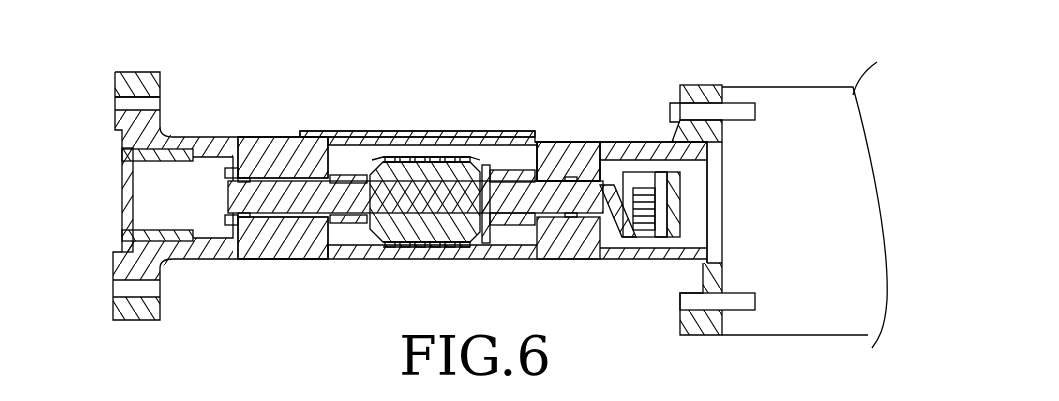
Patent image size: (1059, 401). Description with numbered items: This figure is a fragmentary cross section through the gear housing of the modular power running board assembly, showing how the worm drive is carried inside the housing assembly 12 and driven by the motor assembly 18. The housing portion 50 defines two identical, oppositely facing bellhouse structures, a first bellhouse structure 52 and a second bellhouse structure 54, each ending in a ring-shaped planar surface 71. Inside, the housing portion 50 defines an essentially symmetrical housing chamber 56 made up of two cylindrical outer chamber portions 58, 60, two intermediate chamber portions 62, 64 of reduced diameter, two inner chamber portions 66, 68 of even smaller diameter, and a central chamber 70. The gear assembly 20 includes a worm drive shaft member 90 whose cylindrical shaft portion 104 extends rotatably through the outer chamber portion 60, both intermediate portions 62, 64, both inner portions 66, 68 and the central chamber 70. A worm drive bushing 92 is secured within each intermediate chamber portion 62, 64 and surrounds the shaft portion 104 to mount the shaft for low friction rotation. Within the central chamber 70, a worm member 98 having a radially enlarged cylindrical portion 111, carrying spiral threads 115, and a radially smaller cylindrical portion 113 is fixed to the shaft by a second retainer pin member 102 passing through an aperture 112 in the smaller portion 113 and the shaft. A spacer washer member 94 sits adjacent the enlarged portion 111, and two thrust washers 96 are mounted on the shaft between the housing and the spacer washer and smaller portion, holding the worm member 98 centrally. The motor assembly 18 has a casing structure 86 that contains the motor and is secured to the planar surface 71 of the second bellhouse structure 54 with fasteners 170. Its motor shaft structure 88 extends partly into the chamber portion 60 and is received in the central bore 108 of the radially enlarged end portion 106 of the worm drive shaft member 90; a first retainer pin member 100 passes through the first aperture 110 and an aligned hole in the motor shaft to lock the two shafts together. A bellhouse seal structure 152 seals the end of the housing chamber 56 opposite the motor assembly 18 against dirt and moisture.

The housing assembly 12 is at (593, 130).
The motor assembly 18 is at (832, 76).
The gear assembly 20 is at (224, 172).
The housing portion 50 is at (265, 131).
The first bellhouse structure 52 is at (133, 82).
The second bellhouse structure 54 is at (700, 90).
The housing chamber 56 is at (187, 202).
The cylindrical outer chamber portion 58 is at (155, 300).
The cylindrical outer chamber portion 60 is at (608, 150).
The cylindrical intermediate chamber portion 62 is at (294, 135).
The cylindrical intermediate chamber portion 64 is at (578, 170).
The cylindrical inner chamber portion 66 is at (330, 172).
The cylindrical inner chamber portion 68 is at (556, 170).
The central chamber 70 is at (382, 131).
The ring-shaped planar surface 71 is at (115, 88).
The casing structure 86 is at (870, 66).
The motor shaft structure 88 is at (691, 222).
The worm drive shaft member 90 is at (311, 205).
The worm drive bushing 92 is at (252, 218).
The spacer washer member 94 is at (362, 228).
The thrust washer 96 is at (330, 247).
The worm member 98 is at (408, 233).
The first retainer pin member 100 is at (708, 152).
The second retainer pin member 102 is at (486, 168).
The cylindrical shaft portion 104 is at (611, 235).
The radially enlarged end portion 106 is at (645, 142).
The central bore 108 is at (660, 190).
The first aperture 110 is at (668, 197).
The radially enlarged cylindrical portion 111 is at (413, 157).
The aperture 112 is at (486, 180).
The radially smaller cylindrical portion 113 is at (503, 170).
The spiral threads 115 is at (440, 157).
The bellhouse seal structure 152 is at (114, 156).
The fasteners 170 is at (745, 112).